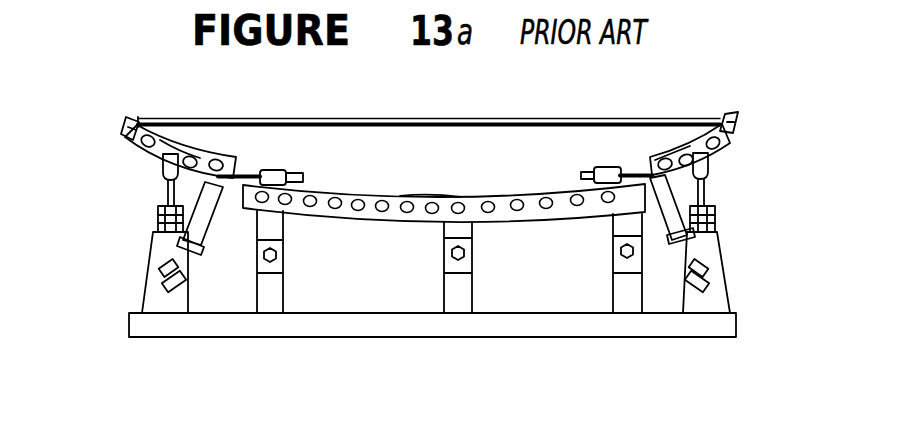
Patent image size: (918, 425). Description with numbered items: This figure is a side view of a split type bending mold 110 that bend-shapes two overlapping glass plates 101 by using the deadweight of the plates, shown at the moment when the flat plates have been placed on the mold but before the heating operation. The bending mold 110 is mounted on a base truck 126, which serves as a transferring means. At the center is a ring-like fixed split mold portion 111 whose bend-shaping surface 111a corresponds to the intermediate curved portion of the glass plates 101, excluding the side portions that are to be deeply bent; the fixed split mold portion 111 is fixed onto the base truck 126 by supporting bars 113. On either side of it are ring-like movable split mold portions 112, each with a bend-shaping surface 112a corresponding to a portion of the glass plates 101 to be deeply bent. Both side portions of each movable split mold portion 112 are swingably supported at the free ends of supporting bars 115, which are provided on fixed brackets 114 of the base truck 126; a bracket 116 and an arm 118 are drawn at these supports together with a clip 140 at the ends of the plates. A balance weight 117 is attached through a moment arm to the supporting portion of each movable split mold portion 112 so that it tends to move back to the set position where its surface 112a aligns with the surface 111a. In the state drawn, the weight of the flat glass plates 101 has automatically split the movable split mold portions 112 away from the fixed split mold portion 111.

The glass plates 101 is at (412, 118).
The split type bending mold 110 is at (491, 184).
The fixed split mold portion 111 is at (380, 212).
The bend-shaping surface of the fixed split mold portion 111a is at (393, 197).
The movable split mold portion 112 is at (224, 152).
The bend-shaping surface of the movable split mold portion 112a is at (193, 152).
The supporting bars 113 is at (267, 295).
The fixed brackets 114 is at (153, 258).
The supporting bars 115 is at (163, 198).
The bracket 116 is at (160, 170).
The balance weight 117 is at (281, 170).
The arm / link 118 is at (244, 174).
The base truck 126 is at (312, 322).
The clip 140 is at (128, 122).